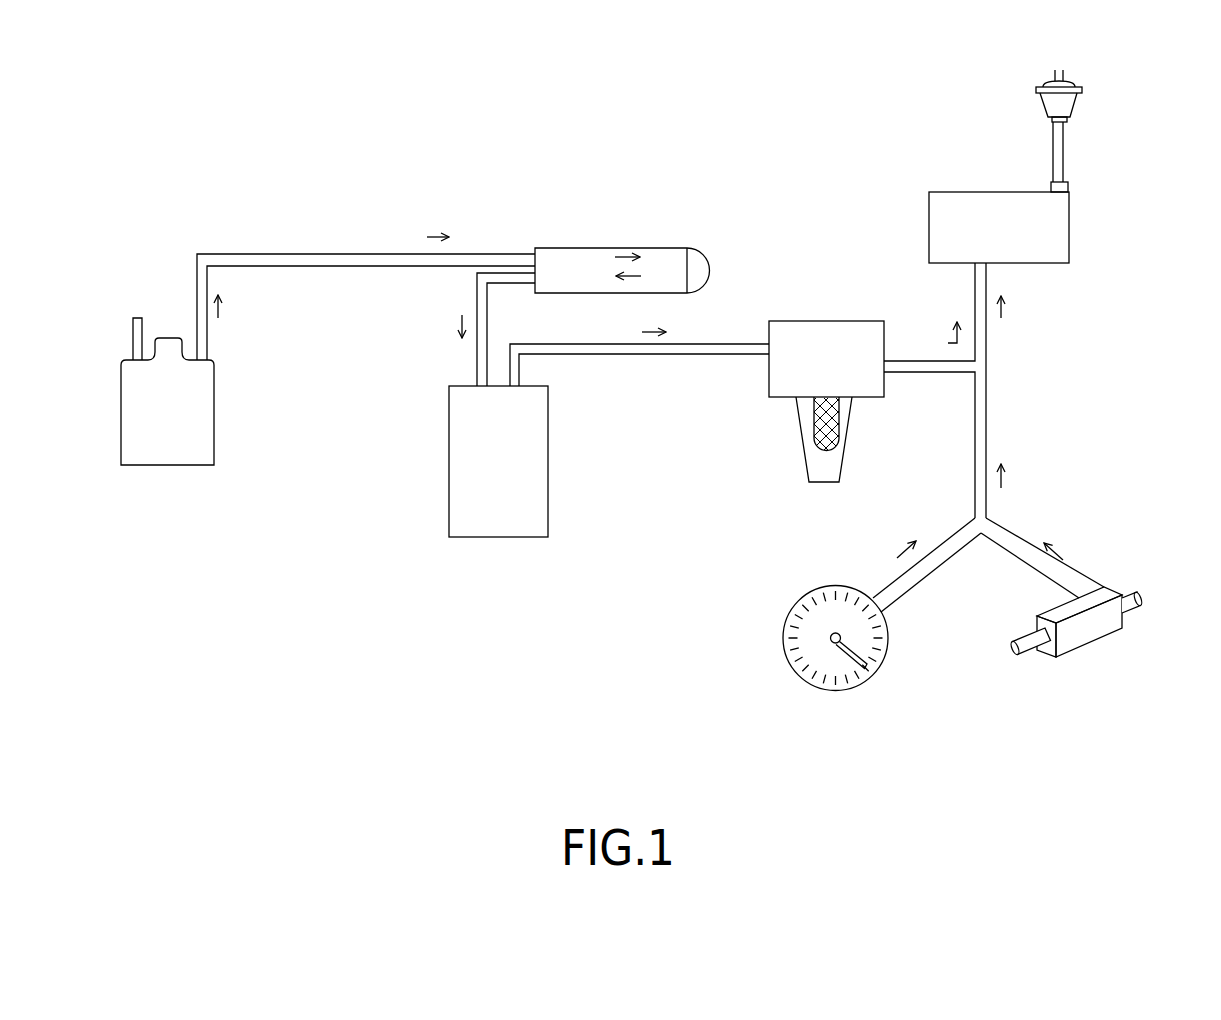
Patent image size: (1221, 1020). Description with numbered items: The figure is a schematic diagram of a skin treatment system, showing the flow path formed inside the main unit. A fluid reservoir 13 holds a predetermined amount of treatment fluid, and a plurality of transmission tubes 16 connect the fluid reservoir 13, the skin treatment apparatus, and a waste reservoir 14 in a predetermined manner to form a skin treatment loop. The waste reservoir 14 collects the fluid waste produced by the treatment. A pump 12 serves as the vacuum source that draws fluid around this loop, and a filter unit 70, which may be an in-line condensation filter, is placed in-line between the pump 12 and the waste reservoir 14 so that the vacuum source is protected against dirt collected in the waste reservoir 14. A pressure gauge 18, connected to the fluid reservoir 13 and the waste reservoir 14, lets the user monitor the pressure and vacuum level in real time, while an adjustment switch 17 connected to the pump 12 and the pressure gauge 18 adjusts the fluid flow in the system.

The pump 12 is at (995, 228).
The fluid reservoir 13 is at (155, 433).
The waste reservoir 14 is at (482, 515).
The transmission tubes 16 is at (338, 260).
The adjustment switch 17 is at (1077, 628).
The pressure gauge 18 is at (835, 663).
The filter unit 70 is at (806, 338).